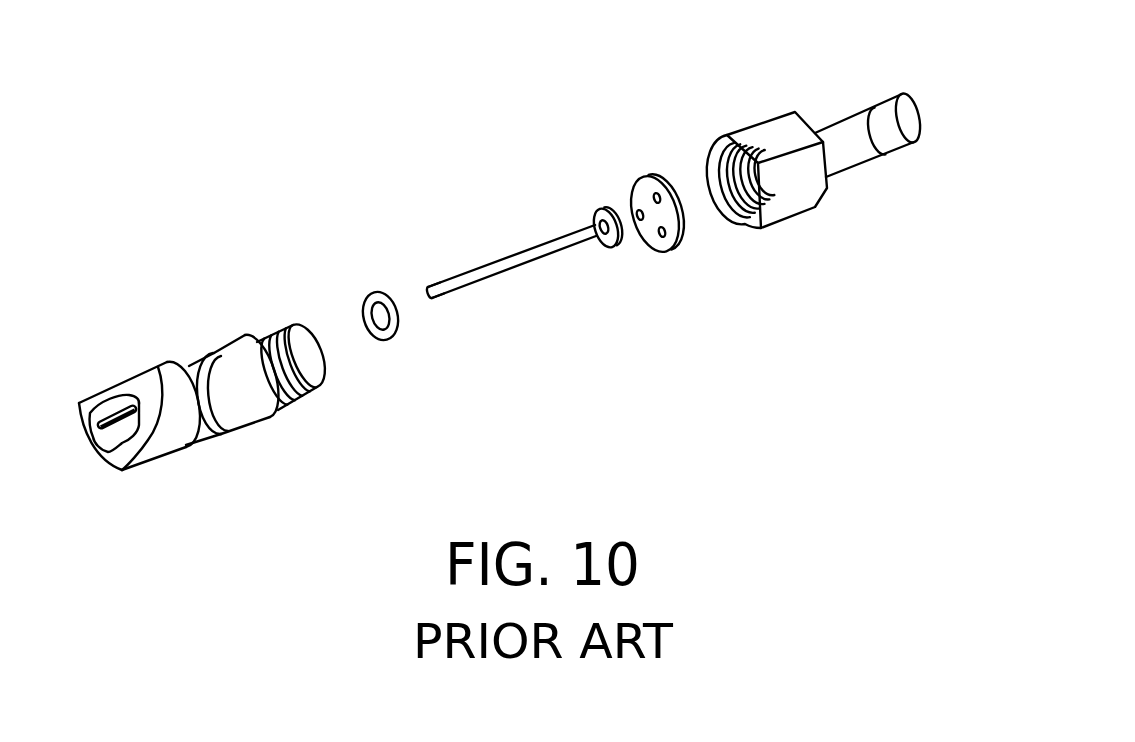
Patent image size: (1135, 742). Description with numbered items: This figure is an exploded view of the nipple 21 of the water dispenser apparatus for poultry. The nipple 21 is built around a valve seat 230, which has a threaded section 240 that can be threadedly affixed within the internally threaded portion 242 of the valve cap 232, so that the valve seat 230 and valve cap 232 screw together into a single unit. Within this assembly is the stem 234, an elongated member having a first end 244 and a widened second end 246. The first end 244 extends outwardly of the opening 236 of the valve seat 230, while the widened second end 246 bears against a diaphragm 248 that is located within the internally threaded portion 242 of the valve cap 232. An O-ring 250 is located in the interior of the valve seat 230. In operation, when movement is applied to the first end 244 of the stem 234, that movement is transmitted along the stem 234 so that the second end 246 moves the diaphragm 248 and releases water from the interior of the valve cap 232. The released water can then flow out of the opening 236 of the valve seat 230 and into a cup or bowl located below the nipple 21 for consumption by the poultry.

The nipple 21 is at (659, 97).
The valve seat 230 is at (173, 437).
The valve cap 232 is at (795, 215).
The stem 234 is at (516, 254).
The opening 236 is at (97, 445).
The threaded section 240 is at (280, 332).
The internally threaded portion 242 is at (764, 122).
The first end 244 is at (432, 298).
The second end 246 is at (620, 242).
The diaphragm 248 is at (685, 234).
The O-ring 250 is at (380, 337).